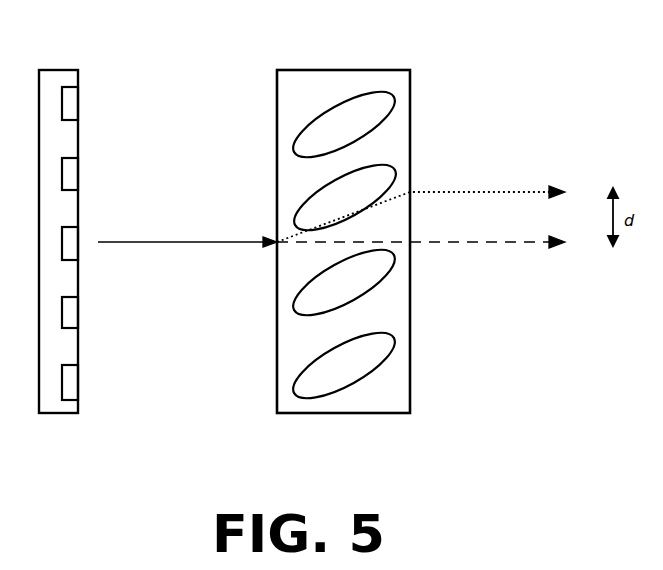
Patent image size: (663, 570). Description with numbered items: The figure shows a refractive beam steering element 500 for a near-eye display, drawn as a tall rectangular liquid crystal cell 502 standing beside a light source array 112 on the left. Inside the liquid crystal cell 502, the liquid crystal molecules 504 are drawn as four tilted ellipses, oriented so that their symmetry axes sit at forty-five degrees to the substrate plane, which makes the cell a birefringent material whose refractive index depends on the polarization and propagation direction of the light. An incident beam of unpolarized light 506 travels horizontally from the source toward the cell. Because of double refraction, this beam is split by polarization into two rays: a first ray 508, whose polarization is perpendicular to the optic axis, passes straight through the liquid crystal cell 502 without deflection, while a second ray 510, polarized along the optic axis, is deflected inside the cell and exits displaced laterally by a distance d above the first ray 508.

The LED array / light source 112 is at (56, 70).
The beam steering element 500 is at (302, 56).
The liquid crystal cell 502 is at (410, 413).
The liquid crystal molecules 504 is at (383, 78).
The incident beam of unpolarized light 506 is at (166, 226).
The first ray 508 is at (439, 242).
The second ray 510 is at (439, 212).